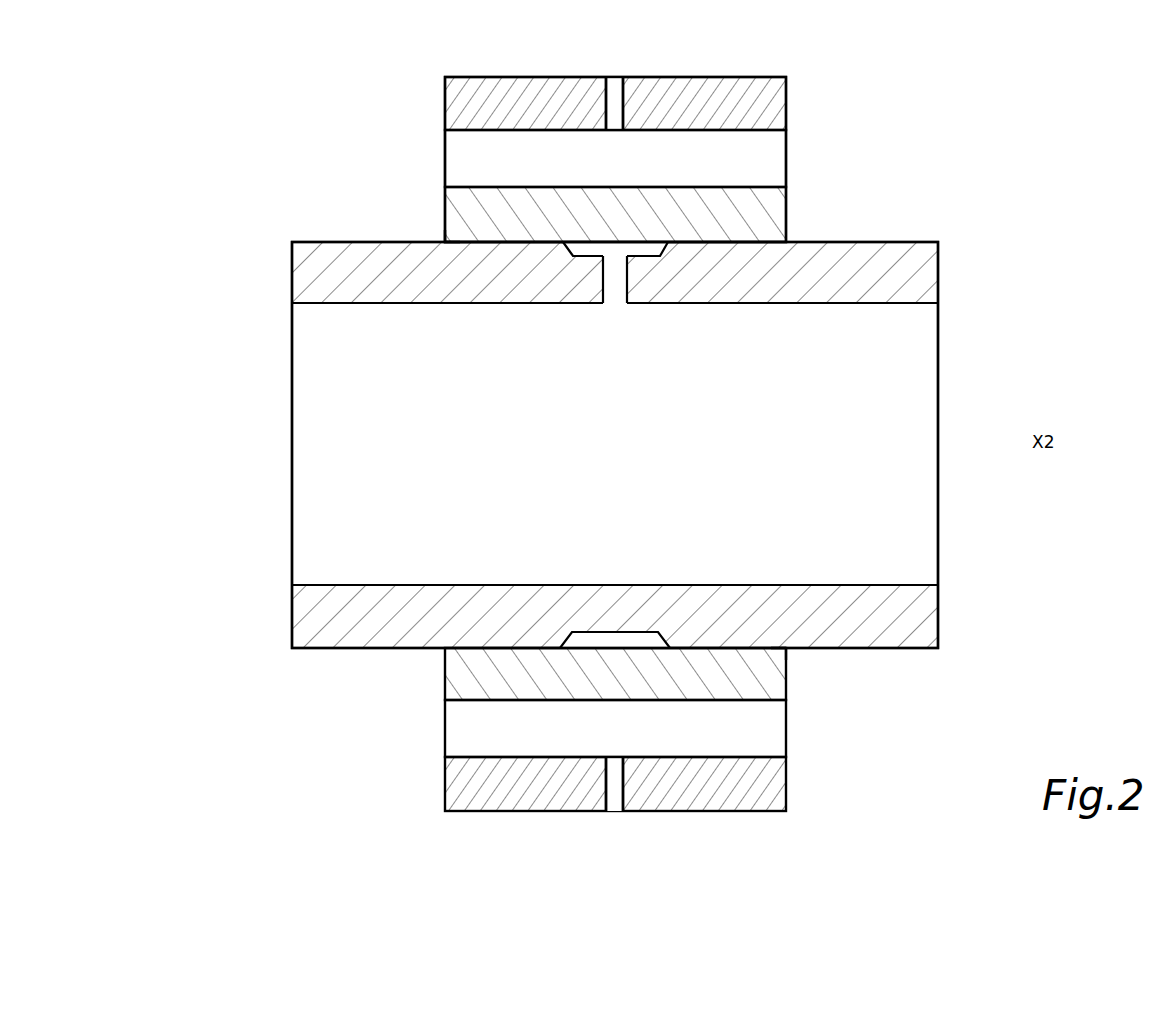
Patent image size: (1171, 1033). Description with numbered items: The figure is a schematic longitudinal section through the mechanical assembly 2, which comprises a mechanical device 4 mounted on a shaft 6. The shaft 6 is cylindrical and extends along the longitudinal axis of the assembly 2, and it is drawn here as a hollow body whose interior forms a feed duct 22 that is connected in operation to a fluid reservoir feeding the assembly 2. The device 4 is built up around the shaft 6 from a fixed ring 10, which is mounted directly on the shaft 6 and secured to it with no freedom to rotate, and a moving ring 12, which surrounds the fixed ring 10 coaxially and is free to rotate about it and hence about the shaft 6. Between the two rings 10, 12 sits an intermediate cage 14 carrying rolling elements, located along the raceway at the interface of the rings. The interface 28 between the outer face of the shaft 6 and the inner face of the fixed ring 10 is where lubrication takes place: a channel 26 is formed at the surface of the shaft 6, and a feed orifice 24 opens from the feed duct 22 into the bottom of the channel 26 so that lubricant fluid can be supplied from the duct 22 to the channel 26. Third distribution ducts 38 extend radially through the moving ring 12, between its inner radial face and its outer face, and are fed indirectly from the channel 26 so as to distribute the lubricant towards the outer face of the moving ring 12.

The mechanical assembly 2 is at (1030, 140).
The mechanical device 4 is at (305, 140).
The shaft 6 is at (898, 266).
The fixed ring 10 is at (765, 211).
The moving ring 12 is at (743, 100).
The intermediate cage 14 is at (768, 157).
The feed duct 22 is at (885, 400).
The feed orifice 24 is at (614, 295).
The channel 26 is at (580, 270).
The interface 28 is at (432, 229).
The third distribution duct 38 is at (613, 76).